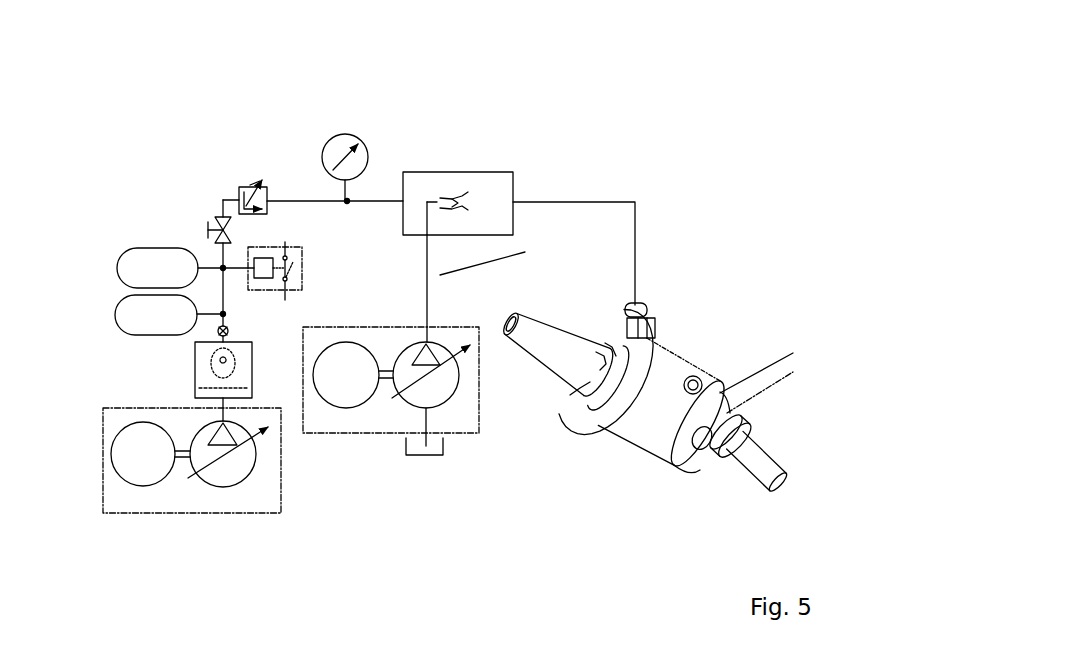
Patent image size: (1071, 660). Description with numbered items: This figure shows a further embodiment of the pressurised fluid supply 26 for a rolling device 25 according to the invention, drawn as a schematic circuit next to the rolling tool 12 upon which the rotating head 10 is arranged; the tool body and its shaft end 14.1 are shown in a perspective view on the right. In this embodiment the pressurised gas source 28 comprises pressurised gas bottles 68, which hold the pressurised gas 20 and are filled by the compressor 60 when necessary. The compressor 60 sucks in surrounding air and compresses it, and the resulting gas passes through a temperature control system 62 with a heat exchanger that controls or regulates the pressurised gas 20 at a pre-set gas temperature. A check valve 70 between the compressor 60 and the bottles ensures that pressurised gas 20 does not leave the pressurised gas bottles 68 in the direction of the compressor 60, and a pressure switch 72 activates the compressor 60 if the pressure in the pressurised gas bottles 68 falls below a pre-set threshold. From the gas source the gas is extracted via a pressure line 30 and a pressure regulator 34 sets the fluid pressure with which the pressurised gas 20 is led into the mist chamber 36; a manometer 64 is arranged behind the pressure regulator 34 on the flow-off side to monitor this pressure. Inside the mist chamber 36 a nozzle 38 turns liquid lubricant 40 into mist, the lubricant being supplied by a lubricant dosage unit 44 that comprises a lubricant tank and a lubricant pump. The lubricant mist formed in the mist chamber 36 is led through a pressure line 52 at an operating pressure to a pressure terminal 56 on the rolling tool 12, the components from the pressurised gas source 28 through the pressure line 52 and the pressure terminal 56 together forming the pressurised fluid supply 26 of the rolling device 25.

The head 10 is at (720, 416).
The rolling tool 12 is at (620, 413).
The spindle shaft end 14.1 is at (777, 477).
The pressurised gas 20 is at (175, 315).
The rolling device 25 is at (768, 132).
The pressurised fluid supply 26 is at (667, 132).
The pressurised gas source 28 is at (97, 167).
The pressure line 30 is at (232, 198).
The pressure regulator 34 is at (248, 195).
The mist chamber 36 is at (515, 185).
The nozzle 38 is at (217, 220).
The liquid lubricant 40 is at (417, 457).
The lubricant dosage unit 44 is at (453, 420).
The pressure line 52 is at (622, 201).
The pressure terminal 56 is at (647, 313).
The compressor 60 is at (265, 457).
The temperature control system 62 is at (195, 364).
The manometer 64 is at (370, 150).
The pressurised gas bottles 68 is at (170, 263).
The check valve 70 is at (228, 328).
The pressure switch 72 is at (293, 257).